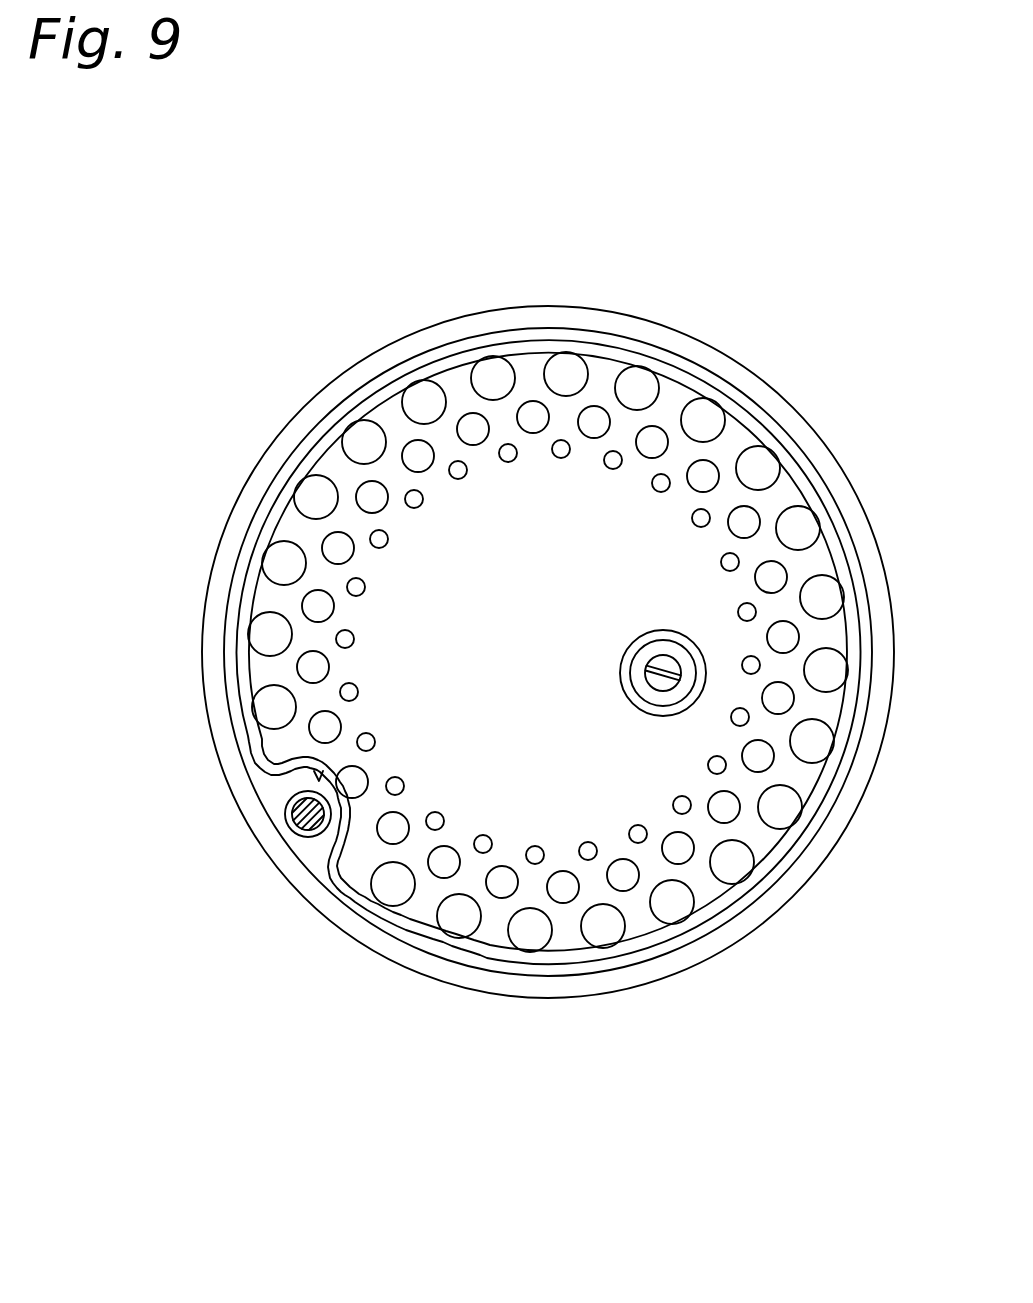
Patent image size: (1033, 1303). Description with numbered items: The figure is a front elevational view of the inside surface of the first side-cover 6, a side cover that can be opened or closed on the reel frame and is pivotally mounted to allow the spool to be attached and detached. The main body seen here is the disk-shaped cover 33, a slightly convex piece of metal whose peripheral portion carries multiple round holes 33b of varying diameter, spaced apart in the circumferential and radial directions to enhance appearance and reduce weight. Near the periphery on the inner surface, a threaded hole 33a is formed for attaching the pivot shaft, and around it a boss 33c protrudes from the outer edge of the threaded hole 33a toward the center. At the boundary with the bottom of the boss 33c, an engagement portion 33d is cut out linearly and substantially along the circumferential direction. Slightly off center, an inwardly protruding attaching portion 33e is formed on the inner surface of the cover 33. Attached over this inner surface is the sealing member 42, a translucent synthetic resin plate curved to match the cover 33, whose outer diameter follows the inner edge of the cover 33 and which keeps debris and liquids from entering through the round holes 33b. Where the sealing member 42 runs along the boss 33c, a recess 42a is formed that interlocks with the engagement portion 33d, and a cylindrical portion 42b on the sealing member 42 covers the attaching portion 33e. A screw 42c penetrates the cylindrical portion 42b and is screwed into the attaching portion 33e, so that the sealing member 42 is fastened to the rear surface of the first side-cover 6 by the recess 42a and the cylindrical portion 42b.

The first side-cover 6 is at (626, 1003).
The cover 33 is at (745, 925).
The threaded hole 33a is at (295, 820).
The round holes 33b is at (530, 864).
The boss 33c is at (330, 790).
The engagement portion 33d is at (322, 768).
The attaching portion 33e is at (630, 675).
The sealing member 42 is at (680, 382).
The recess 42a is at (275, 762).
The cylindrical portion 42b is at (678, 632).
The screw 42c is at (670, 685).